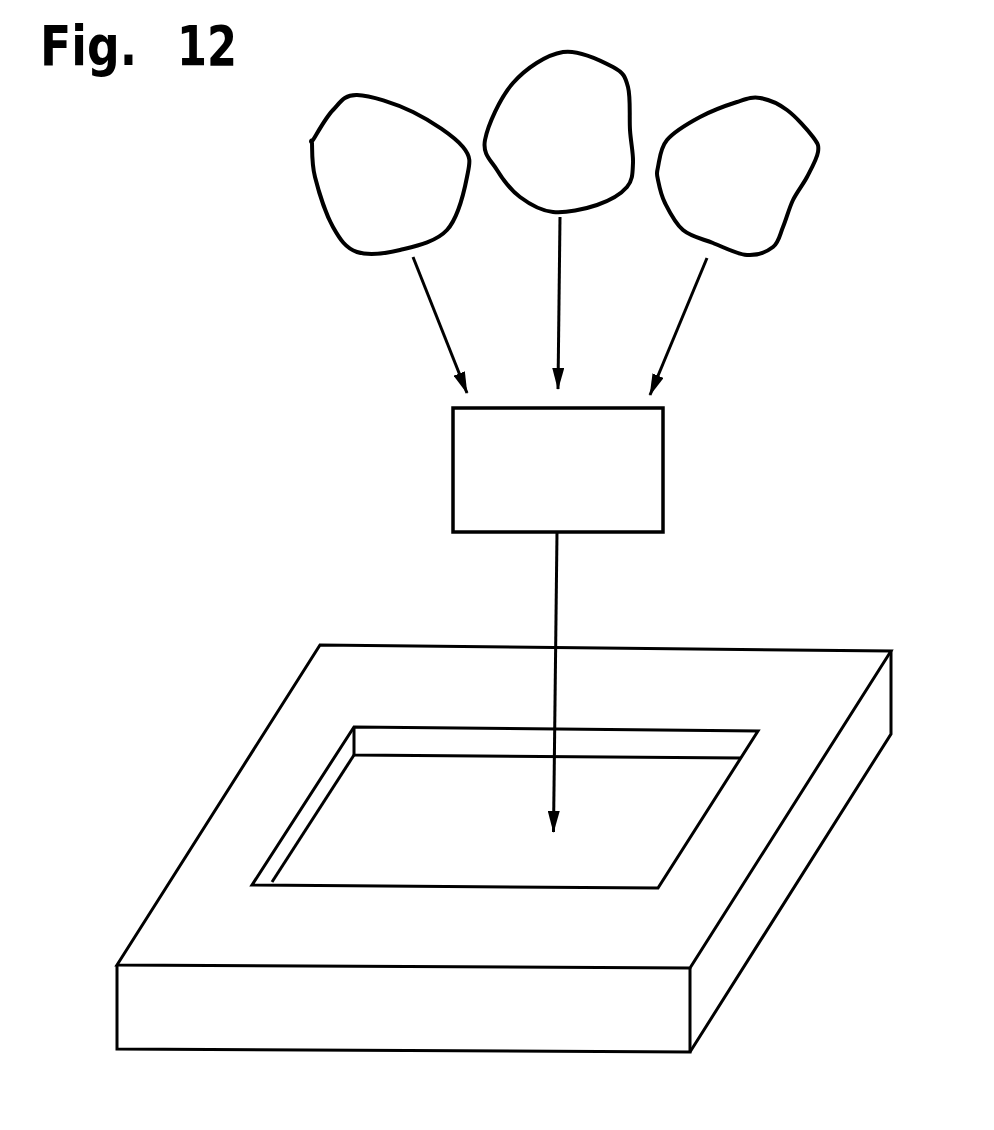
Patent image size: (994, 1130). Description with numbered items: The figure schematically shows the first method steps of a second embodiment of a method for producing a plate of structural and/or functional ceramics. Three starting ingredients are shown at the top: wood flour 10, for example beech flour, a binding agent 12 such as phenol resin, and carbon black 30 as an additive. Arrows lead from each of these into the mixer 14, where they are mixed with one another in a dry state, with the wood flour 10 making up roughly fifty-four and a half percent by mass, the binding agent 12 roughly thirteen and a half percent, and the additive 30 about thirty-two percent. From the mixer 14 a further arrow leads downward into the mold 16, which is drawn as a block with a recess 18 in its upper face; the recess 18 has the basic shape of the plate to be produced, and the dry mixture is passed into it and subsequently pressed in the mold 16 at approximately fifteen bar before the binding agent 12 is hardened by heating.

The wood flour 10 is at (347, 195).
The binding agent 12 is at (613, 85).
The additive (carbon black) 30 is at (775, 200).
The mixer 14 is at (647, 466).
The mold 16 is at (779, 872).
The recess 18 is at (637, 784).